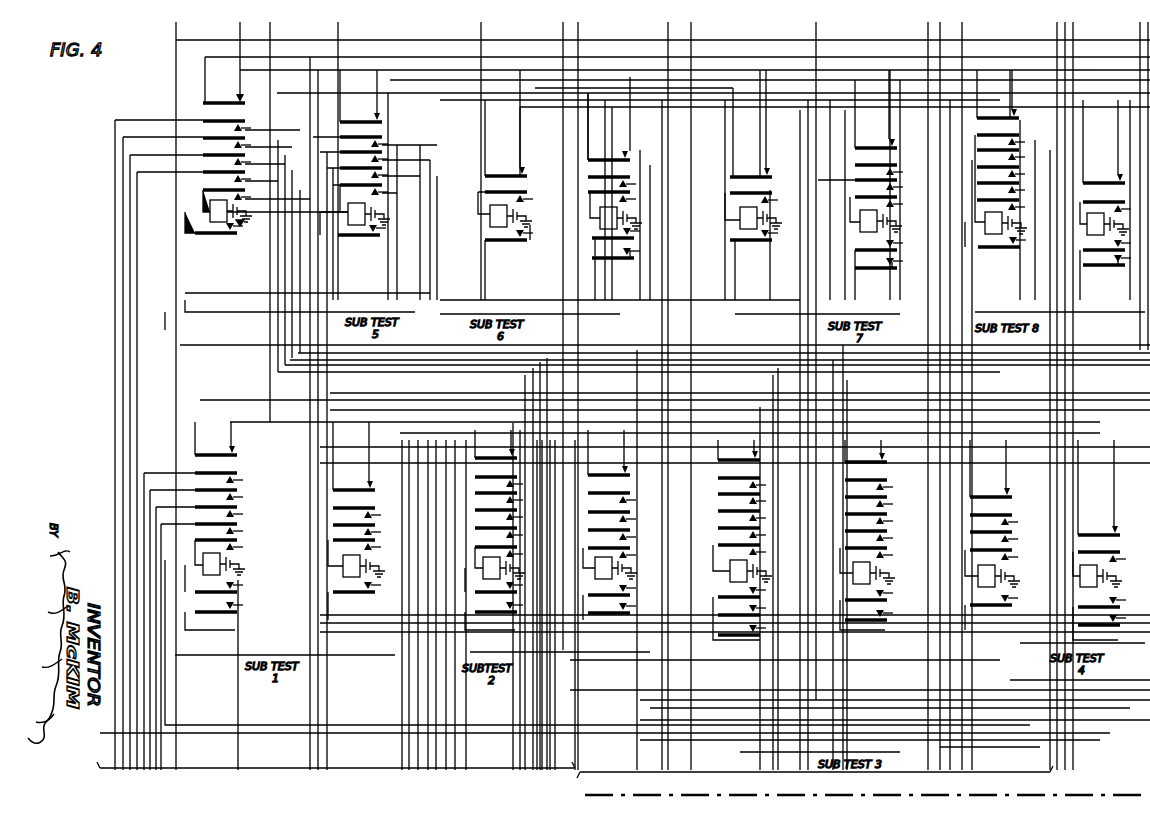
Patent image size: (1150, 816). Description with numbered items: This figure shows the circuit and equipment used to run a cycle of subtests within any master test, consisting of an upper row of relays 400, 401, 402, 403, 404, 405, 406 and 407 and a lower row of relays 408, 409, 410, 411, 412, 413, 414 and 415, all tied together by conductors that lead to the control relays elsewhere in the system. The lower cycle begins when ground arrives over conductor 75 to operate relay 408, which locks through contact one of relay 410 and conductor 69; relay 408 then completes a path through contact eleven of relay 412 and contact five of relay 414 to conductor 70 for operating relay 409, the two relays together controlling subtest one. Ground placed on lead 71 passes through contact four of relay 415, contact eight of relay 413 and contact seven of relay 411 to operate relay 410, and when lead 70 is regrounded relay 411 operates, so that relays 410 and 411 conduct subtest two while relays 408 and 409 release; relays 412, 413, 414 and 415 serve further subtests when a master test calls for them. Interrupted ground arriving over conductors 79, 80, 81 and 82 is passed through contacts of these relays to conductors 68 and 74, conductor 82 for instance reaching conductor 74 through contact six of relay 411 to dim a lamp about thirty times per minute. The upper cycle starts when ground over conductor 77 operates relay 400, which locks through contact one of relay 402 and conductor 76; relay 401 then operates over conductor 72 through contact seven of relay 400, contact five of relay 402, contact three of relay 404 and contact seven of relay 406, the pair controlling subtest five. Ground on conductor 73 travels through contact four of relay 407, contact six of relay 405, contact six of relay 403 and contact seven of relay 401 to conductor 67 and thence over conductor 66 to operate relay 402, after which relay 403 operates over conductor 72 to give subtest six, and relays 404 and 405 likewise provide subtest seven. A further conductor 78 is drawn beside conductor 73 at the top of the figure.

The conductor 66 is at (481, 28).
The conductor 67 is at (338, 28).
The conductor 68 is at (691, 28).
The conductor 69 is at (270, 28).
The conductor 70 is at (946, 57).
The lead 71 is at (1057, 28).
The conductor 72 is at (962, 28).
The conductor 73 is at (1140, 28).
The conductor 74 is at (668, 28).
The conductor 75 is at (176, 28).
The conductor 76 is at (240, 28).
The conductor 77 is at (225, 330).
The conductor 78 is at (1075, 70).
The conductor 79 is at (928, 28).
The conductor 80 is at (816, 28).
The conductor 81 is at (578, 28).
The conductor 82 is at (563, 28).
The relay 400 is at (228, 226).
The relay 401 is at (340, 226).
The relay 402 is at (490, 218).
The relay 403 is at (600, 224).
The relay 404 is at (740, 213).
The relay 405 is at (860, 222).
The relay 406 is at (984, 236).
The relay 407 is at (1085, 228).
The relay 408 is at (203, 568).
The relay 409 is at (354, 578).
The relay 410 is at (514, 620).
The relay 411 is at (595, 568).
The relay 412 is at (730, 568).
The relay 413 is at (853, 572).
The relay 414 is at (983, 588).
The relay 415 is at (1096, 562).